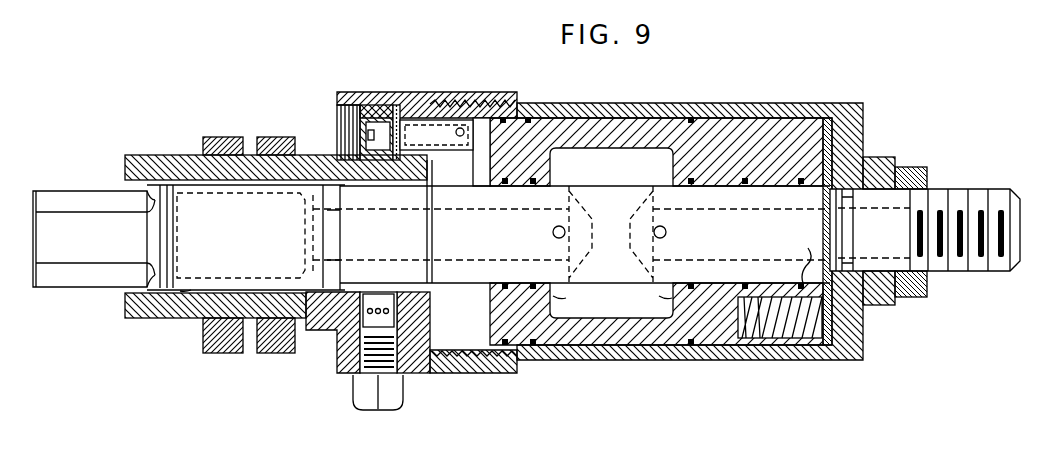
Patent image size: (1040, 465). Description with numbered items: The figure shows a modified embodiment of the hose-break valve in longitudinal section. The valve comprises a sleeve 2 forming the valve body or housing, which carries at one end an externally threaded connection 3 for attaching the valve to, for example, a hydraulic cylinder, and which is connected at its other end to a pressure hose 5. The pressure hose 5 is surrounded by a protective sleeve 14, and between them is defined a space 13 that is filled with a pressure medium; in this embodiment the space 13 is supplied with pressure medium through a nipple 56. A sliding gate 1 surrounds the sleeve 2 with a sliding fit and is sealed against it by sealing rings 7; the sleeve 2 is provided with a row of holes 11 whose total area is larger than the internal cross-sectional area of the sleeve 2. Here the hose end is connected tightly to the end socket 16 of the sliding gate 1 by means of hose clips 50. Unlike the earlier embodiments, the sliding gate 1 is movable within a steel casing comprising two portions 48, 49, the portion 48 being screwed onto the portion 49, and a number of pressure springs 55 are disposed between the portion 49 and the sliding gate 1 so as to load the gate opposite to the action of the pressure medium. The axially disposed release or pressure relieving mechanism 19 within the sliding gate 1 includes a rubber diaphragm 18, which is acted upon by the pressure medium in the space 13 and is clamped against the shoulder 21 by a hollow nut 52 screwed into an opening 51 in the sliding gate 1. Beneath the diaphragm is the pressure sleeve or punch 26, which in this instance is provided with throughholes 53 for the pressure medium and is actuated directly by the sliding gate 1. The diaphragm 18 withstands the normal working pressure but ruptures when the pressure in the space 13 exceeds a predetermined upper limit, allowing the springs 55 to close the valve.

The sliding gate 1 is at (617, 123).
The sleeve 2 is at (336, 302).
The externally threaded connection 3 is at (957, 190).
The pressure hose 5 is at (76, 192).
The sealing rings 7 is at (682, 268).
The holes 11 is at (553, 233).
The space 13 is at (180, 186).
The protective sleeve 14 is at (153, 318).
The end socket 16 is at (191, 290).
The rubber diaphragm 18 is at (402, 107).
The release or pressure relieving mechanism 19 is at (331, 99).
The shoulder 21 is at (432, 119).
The pressure sleeve or punch 26 is at (462, 137).
The casing portion 48 is at (470, 95).
The casing portion 49 is at (714, 108).
The hose clips 50 is at (270, 137).
The opening 51 is at (333, 128).
The hollow nut 52 is at (372, 105).
The throughholes 53 is at (503, 104).
The pressure springs 55 is at (786, 356).
The nipple 56 is at (403, 394).